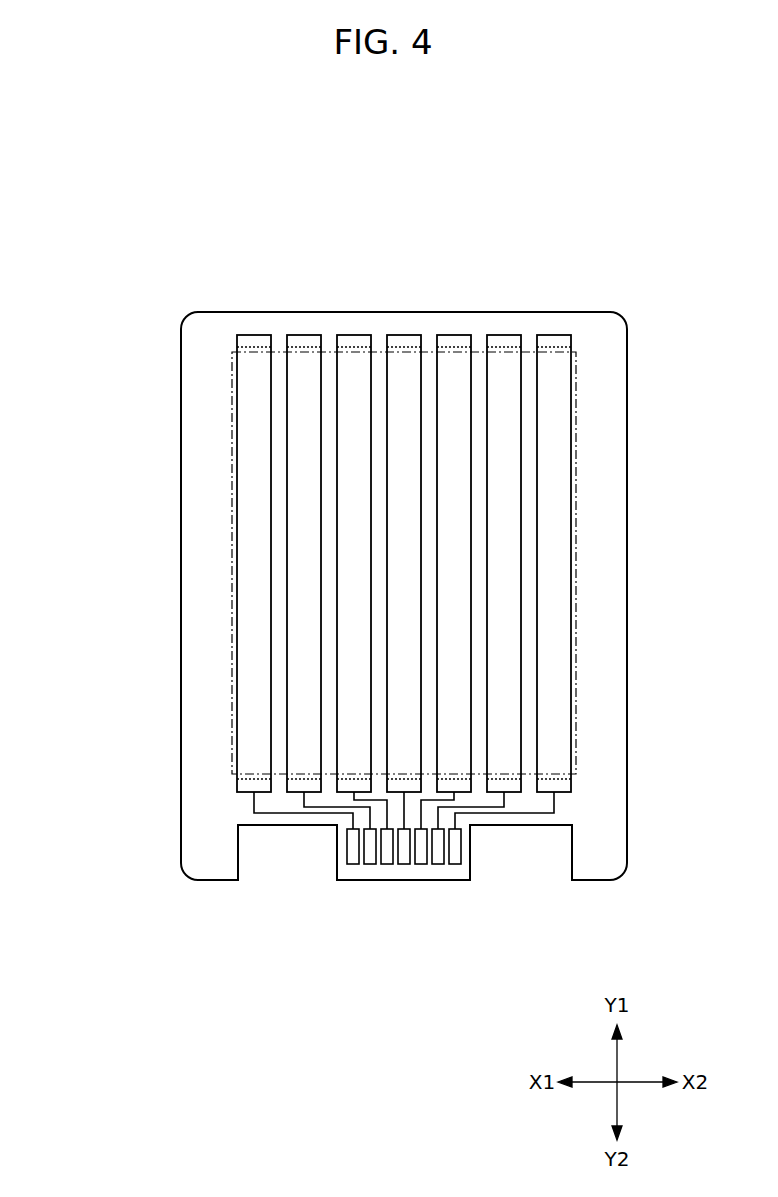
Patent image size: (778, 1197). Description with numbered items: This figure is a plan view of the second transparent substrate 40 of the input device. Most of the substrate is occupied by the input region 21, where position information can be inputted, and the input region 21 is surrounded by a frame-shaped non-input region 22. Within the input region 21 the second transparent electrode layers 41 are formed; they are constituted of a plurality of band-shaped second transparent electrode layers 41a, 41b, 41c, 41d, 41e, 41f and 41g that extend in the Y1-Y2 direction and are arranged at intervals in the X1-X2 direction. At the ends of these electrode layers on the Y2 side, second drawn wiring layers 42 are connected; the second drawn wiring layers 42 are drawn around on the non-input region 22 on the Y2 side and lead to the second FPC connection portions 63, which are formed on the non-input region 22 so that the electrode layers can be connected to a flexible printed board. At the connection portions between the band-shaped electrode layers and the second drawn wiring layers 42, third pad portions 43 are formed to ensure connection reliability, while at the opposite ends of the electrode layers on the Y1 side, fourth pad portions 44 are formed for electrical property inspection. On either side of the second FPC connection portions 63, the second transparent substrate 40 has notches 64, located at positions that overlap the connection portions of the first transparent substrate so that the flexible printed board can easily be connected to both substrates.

The second transparent substrate 40 is at (203, 517).
The non-input region 22 is at (203, 633).
The input region 21 is at (253, 703).
The second transparent electrode layers 41 is at (447, 523).
The band-shaped second transparent electrode layer 41a is at (258, 380).
The band-shaped second transparent electrode layer 41b is at (300, 385).
The band-shaped second transparent electrode layer 41c is at (353, 385).
The band-shaped second transparent electrode layer 41d is at (404, 385).
The band-shaped second transparent electrode layer 41e is at (460, 385).
The band-shaped second transparent electrode layer 41f is at (505, 385).
The seventh electrode 41g is at (556, 385).
The fourth pad portions 44 is at (452, 342).
The third pad portions 43 is at (455, 785).
The second drawn wiring layers 42 is at (252, 800).
The second FPC connection portions 63 is at (388, 852).
The notches 64 is at (288, 852).